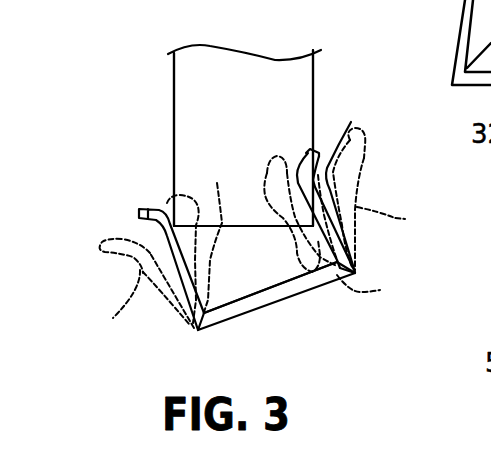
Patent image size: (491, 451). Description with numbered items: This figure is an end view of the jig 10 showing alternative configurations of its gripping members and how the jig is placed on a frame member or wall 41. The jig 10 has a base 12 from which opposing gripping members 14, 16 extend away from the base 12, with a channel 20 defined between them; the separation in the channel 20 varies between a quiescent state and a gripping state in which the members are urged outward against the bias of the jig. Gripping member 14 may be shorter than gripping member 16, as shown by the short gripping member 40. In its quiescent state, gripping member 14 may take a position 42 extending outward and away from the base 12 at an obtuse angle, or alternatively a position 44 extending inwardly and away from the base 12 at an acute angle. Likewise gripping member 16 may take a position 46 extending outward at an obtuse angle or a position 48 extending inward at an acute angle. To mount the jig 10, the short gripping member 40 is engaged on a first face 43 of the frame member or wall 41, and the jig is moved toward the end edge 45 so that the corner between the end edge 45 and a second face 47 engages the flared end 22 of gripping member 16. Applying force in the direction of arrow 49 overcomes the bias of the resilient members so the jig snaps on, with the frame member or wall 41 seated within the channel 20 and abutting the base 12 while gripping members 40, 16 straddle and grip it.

The jig 10 is at (127, 133).
The base 12 is at (266, 302).
The gripping member 14 is at (308, 152).
The gripping member 16 is at (140, 210).
The channel 20 is at (283, 265).
The gripping member end 22 is at (156, 209).
The short gripping member 40 is at (332, 150).
The frame member or wall 41 is at (199, 82).
The position 42 is at (360, 147).
The first face 43 is at (313, 100).
The position 44 is at (273, 168).
The end edge 45 is at (233, 227).
The position 46 is at (110, 240).
The second face 47 is at (173, 108).
The position 48 is at (182, 197).
The arrow 49 is at (255, 338).